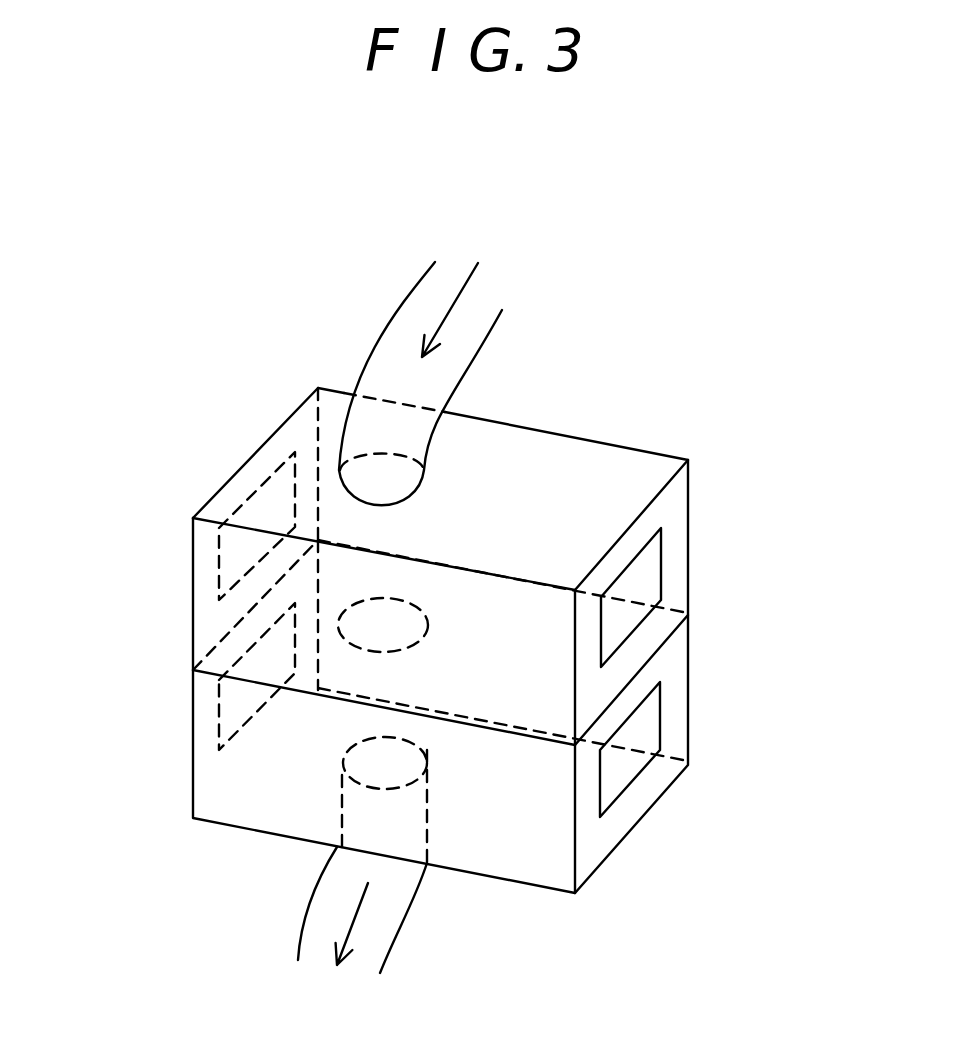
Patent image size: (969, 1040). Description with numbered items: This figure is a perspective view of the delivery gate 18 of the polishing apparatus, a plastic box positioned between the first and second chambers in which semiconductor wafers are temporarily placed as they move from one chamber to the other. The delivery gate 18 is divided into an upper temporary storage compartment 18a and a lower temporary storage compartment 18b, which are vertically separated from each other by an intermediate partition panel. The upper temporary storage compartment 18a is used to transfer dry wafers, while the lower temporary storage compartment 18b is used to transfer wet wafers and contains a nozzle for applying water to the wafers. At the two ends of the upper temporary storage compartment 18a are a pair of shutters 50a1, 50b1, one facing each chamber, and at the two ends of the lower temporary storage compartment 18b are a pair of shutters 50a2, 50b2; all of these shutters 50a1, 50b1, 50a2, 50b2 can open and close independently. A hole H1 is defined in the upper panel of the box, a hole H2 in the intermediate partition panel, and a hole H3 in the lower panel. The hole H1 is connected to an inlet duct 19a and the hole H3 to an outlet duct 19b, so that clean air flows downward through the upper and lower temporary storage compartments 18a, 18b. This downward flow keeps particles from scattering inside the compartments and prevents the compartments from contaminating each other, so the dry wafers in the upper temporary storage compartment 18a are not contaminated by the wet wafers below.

The delivery gate 18 is at (450, 645).
The upper temporary storage compartment 18a is at (453, 548).
The lower temporary storage compartment 18b is at (450, 764).
The inlet duct 19a is at (377, 340).
The outlet duct 19b is at (294, 922).
The hole H1 is at (370, 452).
The hole H2 is at (340, 618).
The hole H3 is at (350, 753).
The shutter 50a1 is at (652, 578).
The shutter 50a2 is at (647, 735).
The shutter 50b1 is at (227, 558).
The shutter 50b2 is at (220, 712).